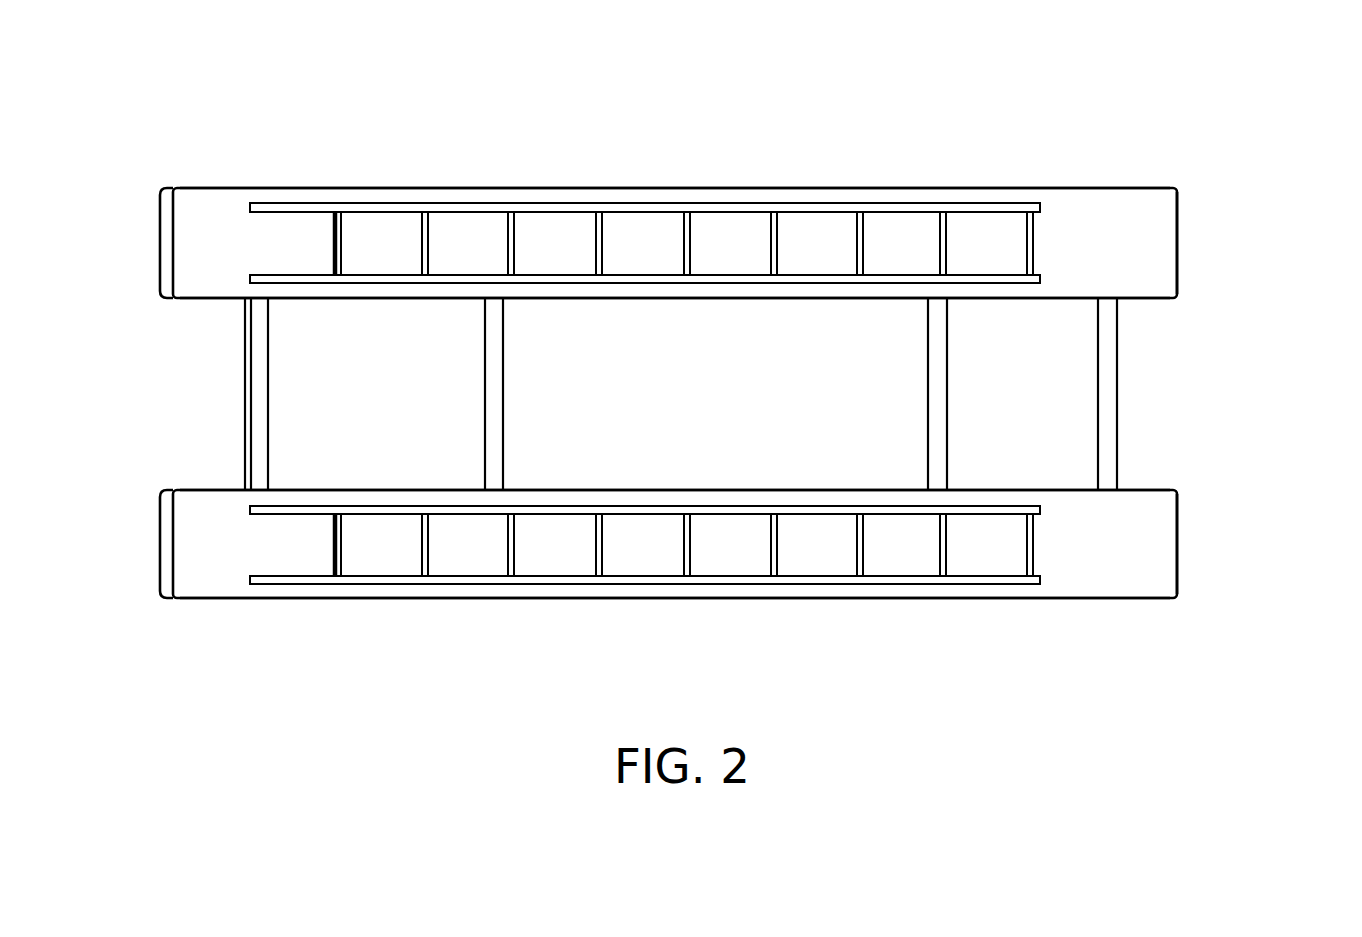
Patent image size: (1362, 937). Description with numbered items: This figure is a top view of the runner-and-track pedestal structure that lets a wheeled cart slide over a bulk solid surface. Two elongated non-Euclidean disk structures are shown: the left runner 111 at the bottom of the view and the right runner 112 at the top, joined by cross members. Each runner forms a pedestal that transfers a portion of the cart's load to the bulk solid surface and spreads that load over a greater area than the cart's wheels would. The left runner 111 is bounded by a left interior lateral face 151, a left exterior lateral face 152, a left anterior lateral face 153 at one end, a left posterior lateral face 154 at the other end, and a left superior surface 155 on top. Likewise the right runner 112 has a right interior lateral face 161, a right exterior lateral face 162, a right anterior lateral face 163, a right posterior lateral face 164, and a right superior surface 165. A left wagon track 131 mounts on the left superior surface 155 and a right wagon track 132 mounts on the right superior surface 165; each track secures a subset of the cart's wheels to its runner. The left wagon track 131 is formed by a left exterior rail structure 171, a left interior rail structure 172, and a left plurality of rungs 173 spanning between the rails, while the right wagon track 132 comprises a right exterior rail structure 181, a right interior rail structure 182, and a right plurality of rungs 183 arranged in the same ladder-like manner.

The left runner 111 is at (1202, 540).
The right runner 112 is at (1202, 241).
The left wagon track 131 is at (572, 658).
The right wagon track 132 is at (486, 106).
The left interior lateral face 151 is at (624, 490).
The left exterior lateral face 152 is at (1137, 599).
The left anterior lateral face 153 is at (170, 543).
The left posterior lateral face 154 is at (1178, 509).
The left superior surface 155 is at (1078, 573).
The right interior lateral face 161 is at (748, 298).
The right exterior lateral face 162 is at (1147, 298).
The right anterior lateral face 163 is at (170, 228).
The right posterior lateral face 164 is at (1178, 205).
The right superior surface 165 is at (1113, 223).
The left exterior rail structure 171 is at (305, 583).
The left interior rail structure 172 is at (383, 513).
The left plurality of rungs 173 is at (513, 543).
The right exterior rail structure 181 is at (284, 203).
The right interior rail structure 182 is at (378, 275).
The right plurality of rungs 183 is at (429, 243).